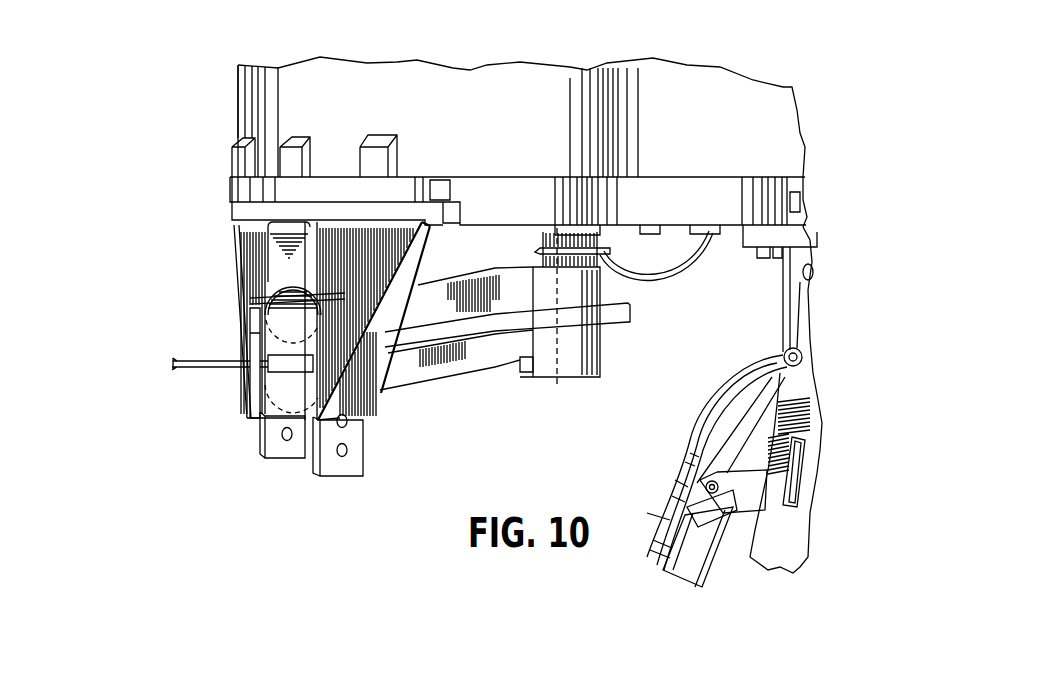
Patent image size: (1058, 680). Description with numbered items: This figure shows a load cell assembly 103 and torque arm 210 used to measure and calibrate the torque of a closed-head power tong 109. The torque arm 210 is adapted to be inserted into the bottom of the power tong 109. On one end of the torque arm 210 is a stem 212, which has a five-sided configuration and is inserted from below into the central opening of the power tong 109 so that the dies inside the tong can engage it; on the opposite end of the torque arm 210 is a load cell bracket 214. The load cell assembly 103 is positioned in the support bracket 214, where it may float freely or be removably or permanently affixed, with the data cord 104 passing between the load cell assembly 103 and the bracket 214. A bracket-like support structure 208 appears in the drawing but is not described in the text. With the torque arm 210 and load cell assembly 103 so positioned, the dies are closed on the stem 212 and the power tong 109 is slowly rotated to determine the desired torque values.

The power tong 109 is at (688, 63).
The mounting bracket 208 is at (245, 258).
The load cell bracket 214 is at (287, 298).
The load cell assembly 103 is at (247, 328).
The data cord 104 is at (200, 367).
The torque arm 210 is at (480, 362).
The stem 212 is at (603, 282).